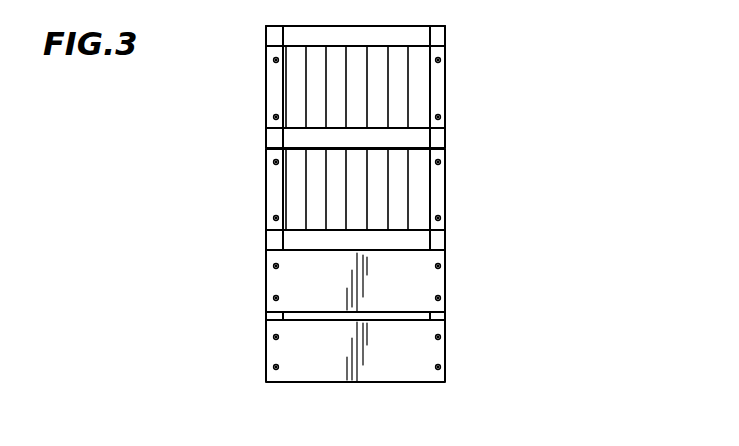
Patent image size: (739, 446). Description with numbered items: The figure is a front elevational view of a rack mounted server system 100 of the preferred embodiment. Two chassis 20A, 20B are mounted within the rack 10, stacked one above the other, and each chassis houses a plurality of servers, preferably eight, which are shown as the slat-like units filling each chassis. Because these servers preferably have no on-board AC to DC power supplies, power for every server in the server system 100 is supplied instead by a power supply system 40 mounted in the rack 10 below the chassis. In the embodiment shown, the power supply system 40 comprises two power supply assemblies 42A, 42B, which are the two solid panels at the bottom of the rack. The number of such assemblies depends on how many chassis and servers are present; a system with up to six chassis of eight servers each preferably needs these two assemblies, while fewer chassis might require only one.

The rack 10 is at (274, 25).
The rack mounted server system 100 is at (482, 43).
The chassis 20A is at (262, 88).
The chassis 20B is at (262, 189).
The power supply system 40 is at (250, 253).
The power supply assembly 42A is at (439, 283).
The power supply assembly 42B is at (432, 350).